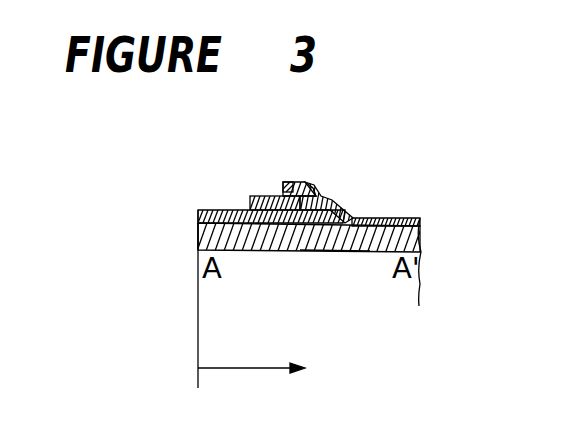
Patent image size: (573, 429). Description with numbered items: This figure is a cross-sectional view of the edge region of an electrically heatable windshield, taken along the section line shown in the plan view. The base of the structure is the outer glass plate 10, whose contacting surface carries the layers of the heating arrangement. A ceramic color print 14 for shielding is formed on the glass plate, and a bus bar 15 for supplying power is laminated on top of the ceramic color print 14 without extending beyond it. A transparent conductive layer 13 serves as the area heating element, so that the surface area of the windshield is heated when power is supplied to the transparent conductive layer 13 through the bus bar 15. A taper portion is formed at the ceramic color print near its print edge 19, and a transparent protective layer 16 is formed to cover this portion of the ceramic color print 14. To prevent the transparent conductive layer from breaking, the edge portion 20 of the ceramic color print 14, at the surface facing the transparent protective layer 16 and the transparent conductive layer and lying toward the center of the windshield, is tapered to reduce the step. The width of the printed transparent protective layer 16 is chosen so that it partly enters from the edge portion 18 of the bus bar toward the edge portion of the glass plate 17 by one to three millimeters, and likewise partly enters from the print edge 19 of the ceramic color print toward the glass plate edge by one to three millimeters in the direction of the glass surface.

The outer glass plate 10 is at (285, 252).
The transparent conductive layer 13 is at (293, 182).
The ceramic color print 14 is at (217, 210).
The bus bar 15 is at (263, 196).
The transparent protective layer 16 is at (335, 198).
The edge portion of the glass plate 17 is at (197, 237).
The edge portion of the bus bar 18 is at (283, 182).
The print edge of the ceramic color print 19 is at (335, 252).
The edge portion of the ceramic color print 20 is at (355, 216).